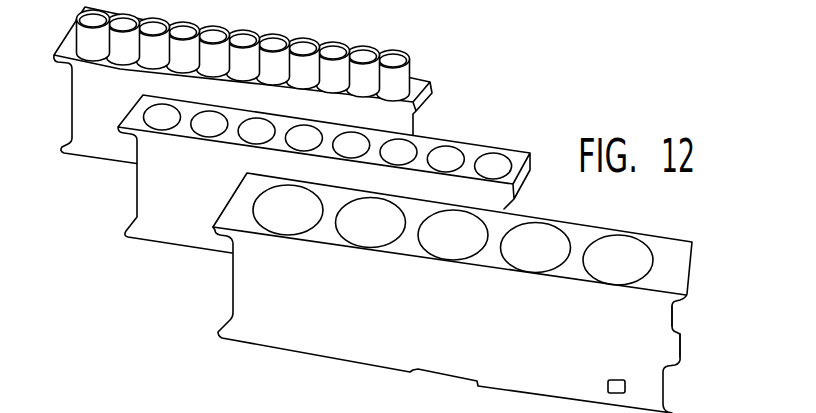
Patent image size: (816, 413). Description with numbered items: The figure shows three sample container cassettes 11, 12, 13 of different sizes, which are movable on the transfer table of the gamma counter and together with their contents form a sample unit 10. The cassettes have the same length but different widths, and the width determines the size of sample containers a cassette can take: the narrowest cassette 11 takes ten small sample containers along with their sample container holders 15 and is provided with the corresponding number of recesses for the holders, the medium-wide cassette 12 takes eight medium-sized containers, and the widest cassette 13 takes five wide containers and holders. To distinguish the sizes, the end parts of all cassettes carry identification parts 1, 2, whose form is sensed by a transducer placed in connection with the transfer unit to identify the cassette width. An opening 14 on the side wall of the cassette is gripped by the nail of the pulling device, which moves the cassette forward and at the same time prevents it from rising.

The sample unit 10 is at (382, 210).
The sample container cassette 11 is at (83, 93).
The sample container cassette 12 is at (147, 185).
The sample container cassette 13 is at (247, 283).
The opening 14 is at (617, 379).
The sample container holder 15 is at (402, 47).
The identification part 1 is at (678, 319).
The identification part 2 is at (688, 358).